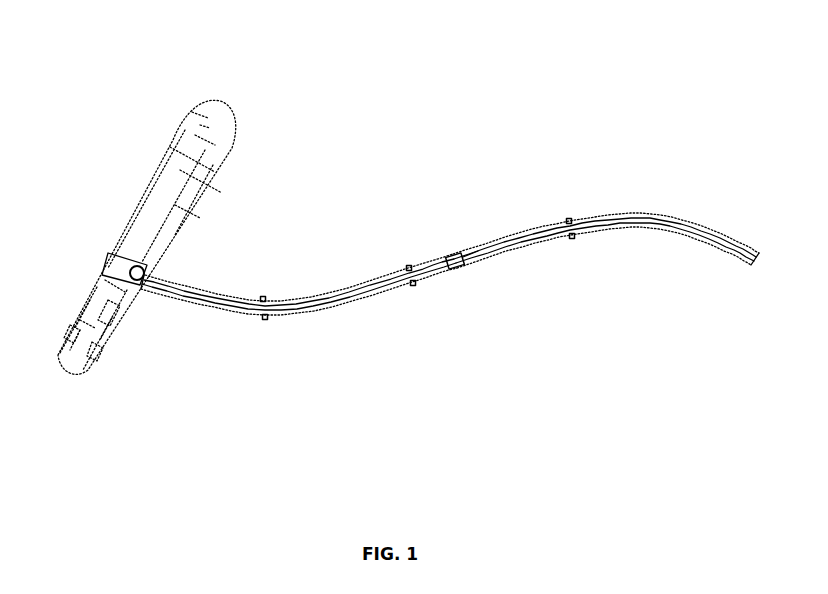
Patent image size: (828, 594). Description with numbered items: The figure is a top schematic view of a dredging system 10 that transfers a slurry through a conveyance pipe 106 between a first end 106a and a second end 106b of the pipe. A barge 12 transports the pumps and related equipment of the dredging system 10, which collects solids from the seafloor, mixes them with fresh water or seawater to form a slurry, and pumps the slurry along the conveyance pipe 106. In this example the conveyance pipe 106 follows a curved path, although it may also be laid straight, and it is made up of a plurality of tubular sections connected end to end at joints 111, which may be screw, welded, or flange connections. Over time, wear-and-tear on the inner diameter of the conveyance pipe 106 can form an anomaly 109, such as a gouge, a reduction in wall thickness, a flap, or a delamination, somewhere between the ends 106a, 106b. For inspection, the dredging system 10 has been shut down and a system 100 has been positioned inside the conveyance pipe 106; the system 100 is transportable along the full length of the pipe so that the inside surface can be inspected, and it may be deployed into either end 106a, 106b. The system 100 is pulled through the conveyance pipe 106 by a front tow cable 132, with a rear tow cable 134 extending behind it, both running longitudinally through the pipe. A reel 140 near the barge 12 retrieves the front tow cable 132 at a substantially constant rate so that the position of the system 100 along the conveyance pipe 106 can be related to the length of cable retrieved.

The dredging system 10 is at (82, 143).
The barge 12 is at (194, 113).
The system 100 is at (449, 254).
The conveyance pipe 106 is at (449, 275).
The first end 106a is at (141, 283).
The second end 106b is at (756, 264).
The anomaly 109 is at (480, 248).
The joints 111 is at (263, 296).
The front tow cable 132 is at (363, 289).
The rear tow cable 134 is at (543, 232).
The reel 140 is at (144, 269).